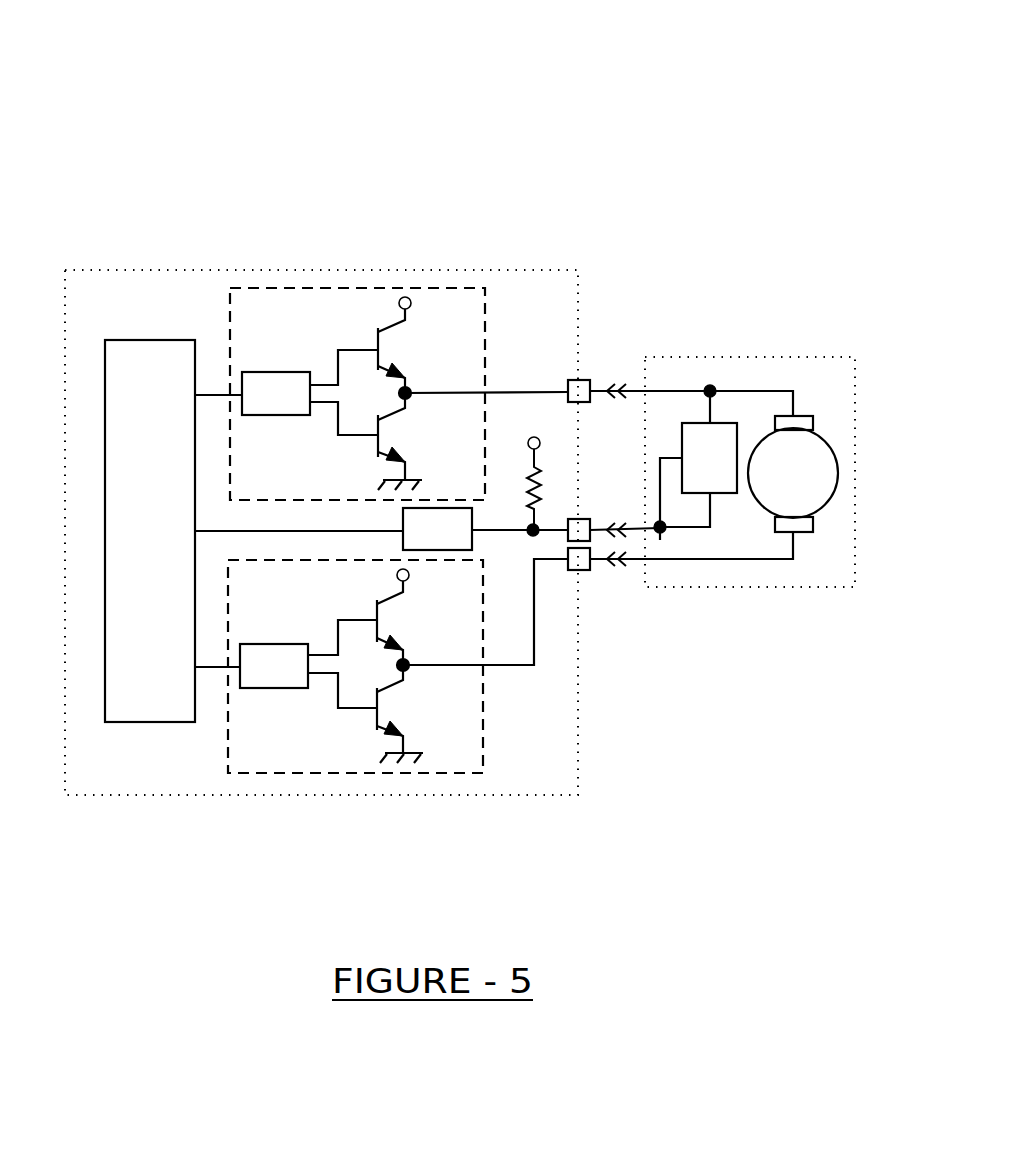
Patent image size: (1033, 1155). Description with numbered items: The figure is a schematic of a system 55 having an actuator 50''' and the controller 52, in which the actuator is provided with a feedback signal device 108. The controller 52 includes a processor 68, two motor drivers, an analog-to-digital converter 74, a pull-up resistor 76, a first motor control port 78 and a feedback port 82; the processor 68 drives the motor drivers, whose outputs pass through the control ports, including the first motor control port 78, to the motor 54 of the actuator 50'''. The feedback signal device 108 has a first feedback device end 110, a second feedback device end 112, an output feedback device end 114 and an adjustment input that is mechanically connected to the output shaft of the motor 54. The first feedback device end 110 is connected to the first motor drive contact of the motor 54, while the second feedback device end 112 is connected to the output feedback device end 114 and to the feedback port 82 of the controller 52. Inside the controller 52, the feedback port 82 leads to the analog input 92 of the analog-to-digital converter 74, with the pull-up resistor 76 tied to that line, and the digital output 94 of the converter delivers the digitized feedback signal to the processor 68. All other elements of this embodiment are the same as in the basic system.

The actuator drive circuit 55 is at (698, 152).
The controller 52 is at (578, 268).
The microprocessor 68 is at (132, 365).
The signal line 94 is at (307, 533).
The resistor/interface block 74 is at (450, 542).
The feedback line 92 is at (503, 531).
The pull-up resistor 76 is at (536, 490).
The connector terminal 78 is at (590, 380).
The connector terminal 82 is at (591, 540).
The actuator assembly 50''' is at (780, 431).
The junction node 110 is at (706, 387).
The sensing element 108 is at (717, 447).
The junction node 112 is at (668, 529).
The connection node 114 is at (665, 531).
The motor 54 is at (838, 474).